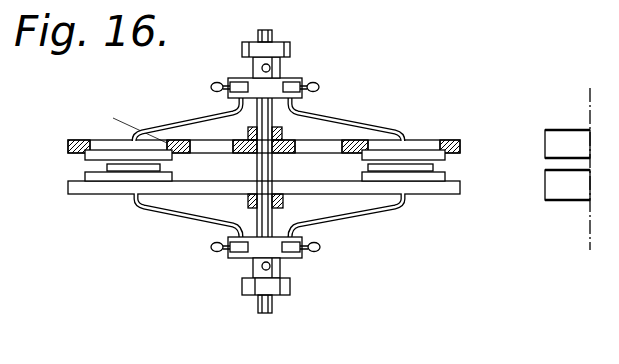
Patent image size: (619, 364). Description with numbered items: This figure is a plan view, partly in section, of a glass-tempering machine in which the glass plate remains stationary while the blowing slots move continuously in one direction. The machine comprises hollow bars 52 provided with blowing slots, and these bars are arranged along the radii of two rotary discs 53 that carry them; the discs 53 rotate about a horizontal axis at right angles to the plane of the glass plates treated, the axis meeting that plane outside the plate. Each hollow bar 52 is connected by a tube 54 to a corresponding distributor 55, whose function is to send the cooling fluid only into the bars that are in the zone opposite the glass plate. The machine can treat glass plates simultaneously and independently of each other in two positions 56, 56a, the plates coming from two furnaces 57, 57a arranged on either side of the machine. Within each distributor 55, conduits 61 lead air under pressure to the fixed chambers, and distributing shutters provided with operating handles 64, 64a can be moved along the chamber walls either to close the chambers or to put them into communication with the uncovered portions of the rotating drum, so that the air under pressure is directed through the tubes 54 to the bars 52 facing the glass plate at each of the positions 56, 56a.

The hollow bars 52 is at (97, 178).
The rotary discs 53 is at (459, 182).
The tube 54 is at (349, 121).
The distributors 55 is at (260, 88).
The position 56 is at (110, 173).
The position 56a is at (388, 171).
The furnace 57 is at (230, 144).
The furnace 57a is at (560, 178).
The conduits 61 is at (273, 68).
The operating handle 64 is at (211, 87).
The operating handle 64a is at (320, 87).